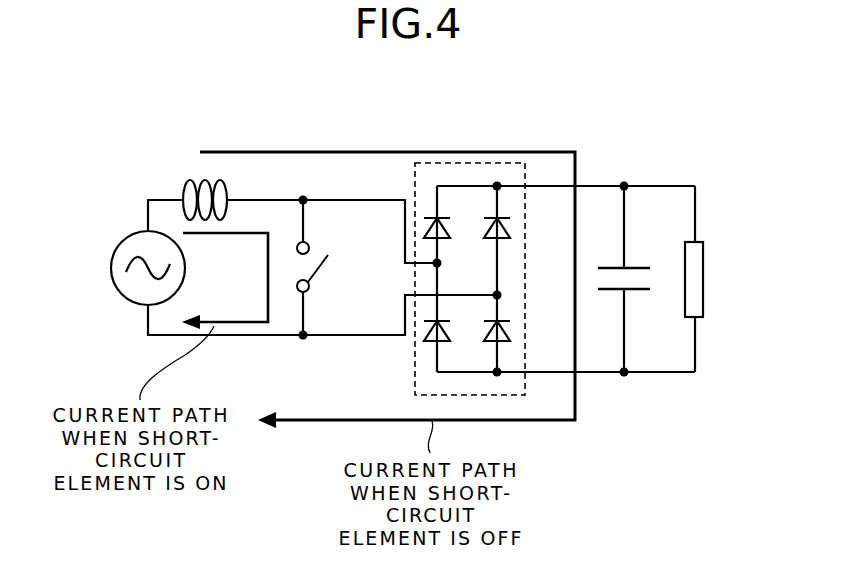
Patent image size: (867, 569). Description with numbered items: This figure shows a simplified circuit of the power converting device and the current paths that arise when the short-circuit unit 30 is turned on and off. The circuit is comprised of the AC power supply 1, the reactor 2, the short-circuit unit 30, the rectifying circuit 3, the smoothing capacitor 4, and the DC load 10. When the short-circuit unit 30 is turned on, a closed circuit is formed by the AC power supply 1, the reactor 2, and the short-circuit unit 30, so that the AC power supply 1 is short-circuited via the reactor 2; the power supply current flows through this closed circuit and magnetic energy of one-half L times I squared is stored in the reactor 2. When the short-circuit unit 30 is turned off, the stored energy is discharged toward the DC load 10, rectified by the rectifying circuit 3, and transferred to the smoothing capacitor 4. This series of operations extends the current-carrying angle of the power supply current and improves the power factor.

The AC power supply 1 is at (111, 265).
The reactor 2 is at (182, 185).
The rectifying circuit 3 is at (468, 163).
The smoothing capacitor 4 is at (635, 267).
The DC load 10 is at (706, 268).
The short-circuit unit 30 is at (310, 247).